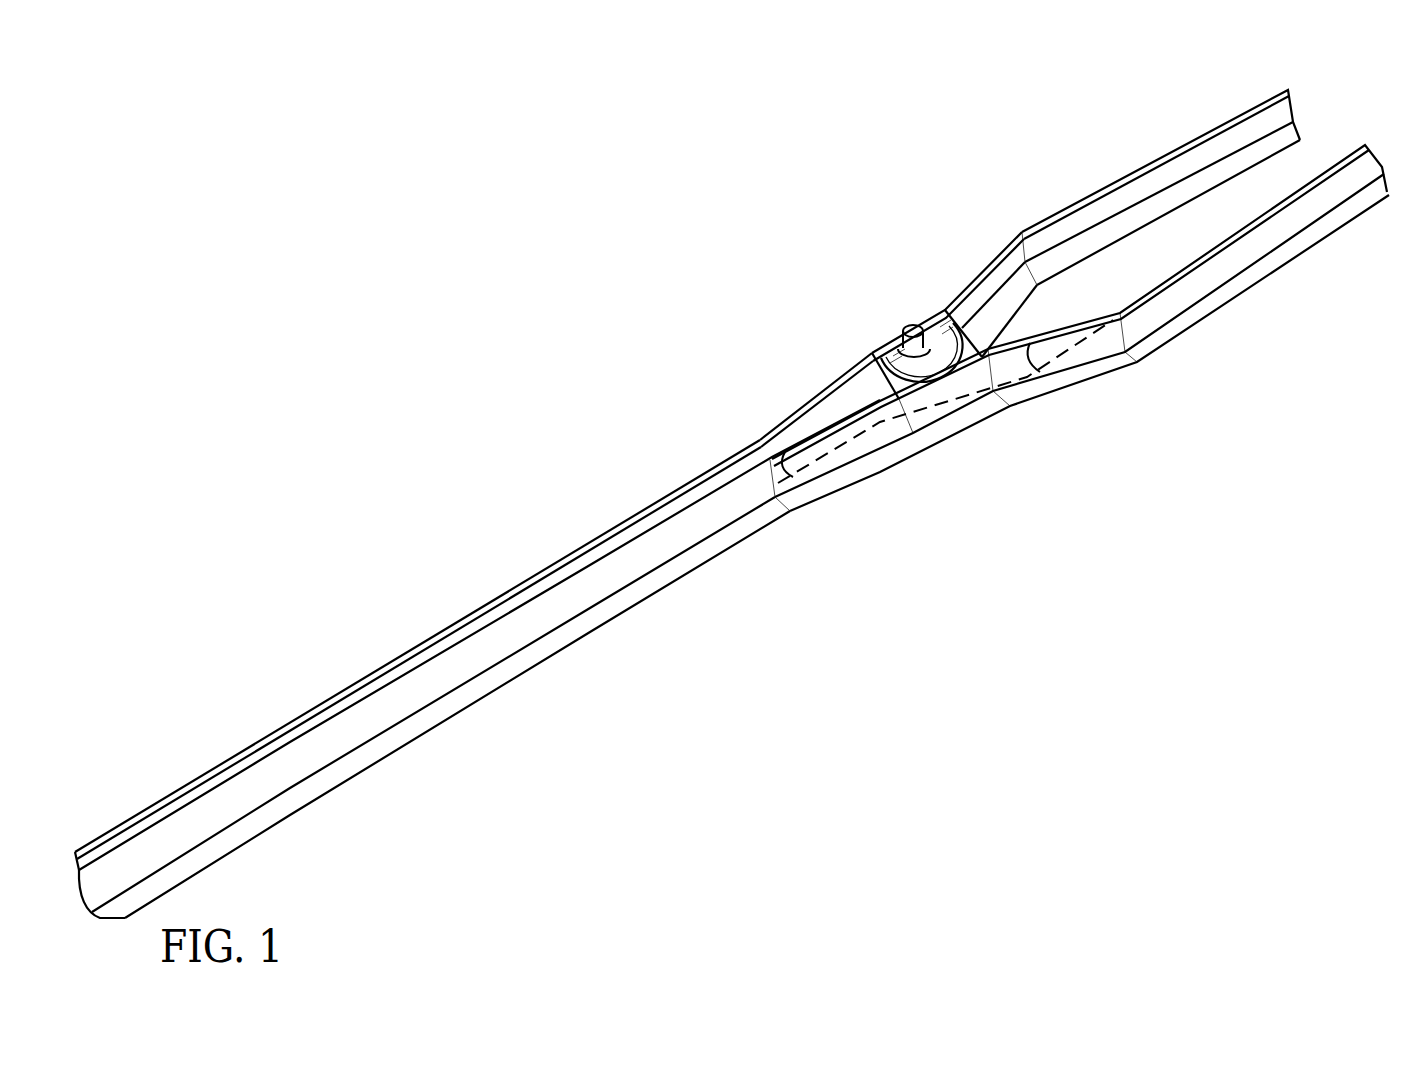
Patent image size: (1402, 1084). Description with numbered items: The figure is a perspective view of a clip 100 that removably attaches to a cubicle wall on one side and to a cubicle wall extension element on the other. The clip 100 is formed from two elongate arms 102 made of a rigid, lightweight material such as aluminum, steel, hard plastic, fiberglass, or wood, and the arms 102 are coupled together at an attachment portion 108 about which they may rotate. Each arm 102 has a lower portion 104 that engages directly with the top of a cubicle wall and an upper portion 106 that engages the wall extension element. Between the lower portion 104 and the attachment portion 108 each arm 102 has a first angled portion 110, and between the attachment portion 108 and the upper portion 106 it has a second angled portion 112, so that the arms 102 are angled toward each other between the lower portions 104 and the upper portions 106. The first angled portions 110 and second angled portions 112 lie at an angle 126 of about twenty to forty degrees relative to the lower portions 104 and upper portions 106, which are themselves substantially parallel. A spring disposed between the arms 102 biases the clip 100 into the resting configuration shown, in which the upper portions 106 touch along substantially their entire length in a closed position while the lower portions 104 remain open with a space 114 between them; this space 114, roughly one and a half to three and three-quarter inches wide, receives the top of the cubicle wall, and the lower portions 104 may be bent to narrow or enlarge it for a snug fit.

The clip 100 is at (278, 586).
The elongate arms 102 is at (1176, 104).
The lower portion 104 is at (1140, 167).
The upper portion 106 is at (473, 613).
The attachment portion 108 is at (876, 319).
The first angled portion 110 is at (975, 272).
The second angled portion 112 is at (828, 390).
The space 114 is at (1166, 208).
The angle 126 is at (798, 462).